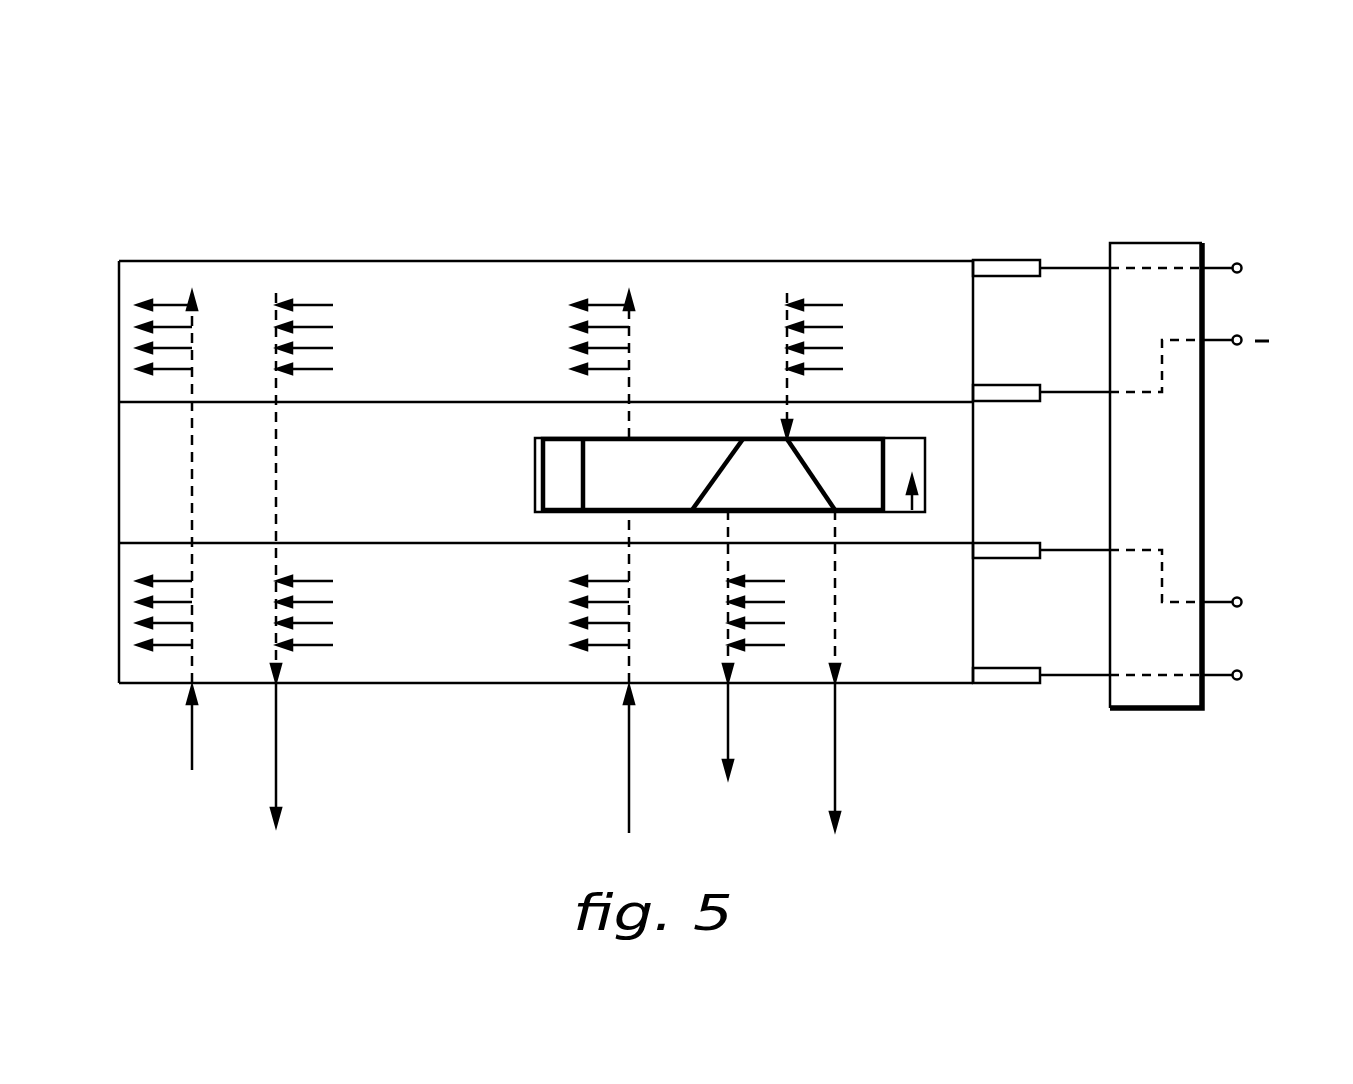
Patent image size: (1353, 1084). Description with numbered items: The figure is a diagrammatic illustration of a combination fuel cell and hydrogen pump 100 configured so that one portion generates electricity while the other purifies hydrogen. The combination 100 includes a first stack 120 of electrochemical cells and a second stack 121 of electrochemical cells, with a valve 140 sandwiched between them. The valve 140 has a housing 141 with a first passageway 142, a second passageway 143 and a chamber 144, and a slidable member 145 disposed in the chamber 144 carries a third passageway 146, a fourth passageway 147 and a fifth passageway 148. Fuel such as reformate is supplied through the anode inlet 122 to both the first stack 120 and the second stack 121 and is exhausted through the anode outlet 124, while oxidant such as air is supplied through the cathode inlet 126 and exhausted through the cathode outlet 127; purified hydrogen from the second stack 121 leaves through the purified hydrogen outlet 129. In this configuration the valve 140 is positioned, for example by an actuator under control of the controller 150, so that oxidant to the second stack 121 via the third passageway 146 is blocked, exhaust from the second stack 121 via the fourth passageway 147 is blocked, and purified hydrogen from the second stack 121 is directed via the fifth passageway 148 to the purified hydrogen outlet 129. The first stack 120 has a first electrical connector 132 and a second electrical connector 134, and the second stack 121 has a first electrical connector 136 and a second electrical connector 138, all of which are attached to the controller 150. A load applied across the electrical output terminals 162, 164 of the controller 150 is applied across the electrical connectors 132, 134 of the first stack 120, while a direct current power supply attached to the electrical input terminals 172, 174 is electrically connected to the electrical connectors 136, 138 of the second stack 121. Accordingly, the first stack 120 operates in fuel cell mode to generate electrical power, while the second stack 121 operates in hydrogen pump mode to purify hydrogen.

The combination fuel cell and hydrogen pump 100 is at (530, 390).
The first stack 120 is at (546, 745).
The second stack 121 is at (546, 200).
The anode inlet 122 is at (146, 744).
The anode outlet 124 is at (313, 784).
The cathode inlet 126 is at (637, 579).
The cathode outlet 127 is at (743, 671).
The purified hydrogen outlet 129 is at (844, 699).
The first electrical connector 132 is at (1041, 637).
The second electrical connector 134 is at (1041, 512).
The first electrical connector 136 is at (1041, 354).
The second electrical connector 138 is at (1041, 229).
The valve 140 is at (90, 372).
The housing 141 is at (92, 581).
The first passageway 142 is at (247, 487).
The second passageway 143 is at (313, 487).
The chamber 144 is at (927, 535).
The slidable member 145 is at (679, 402).
The third passageway 146 is at (713, 474).
The fourth passageway 147 is at (671, 474).
The fifth passageway 148 is at (777, 474).
The controller 150 is at (1224, 448).
The electrical output terminal 162 is at (1272, 660).
The electrical output terminal 164 is at (1272, 587).
The electrical input terminal 172 is at (1265, 365).
The electrical input terminal 174 is at (1265, 287).